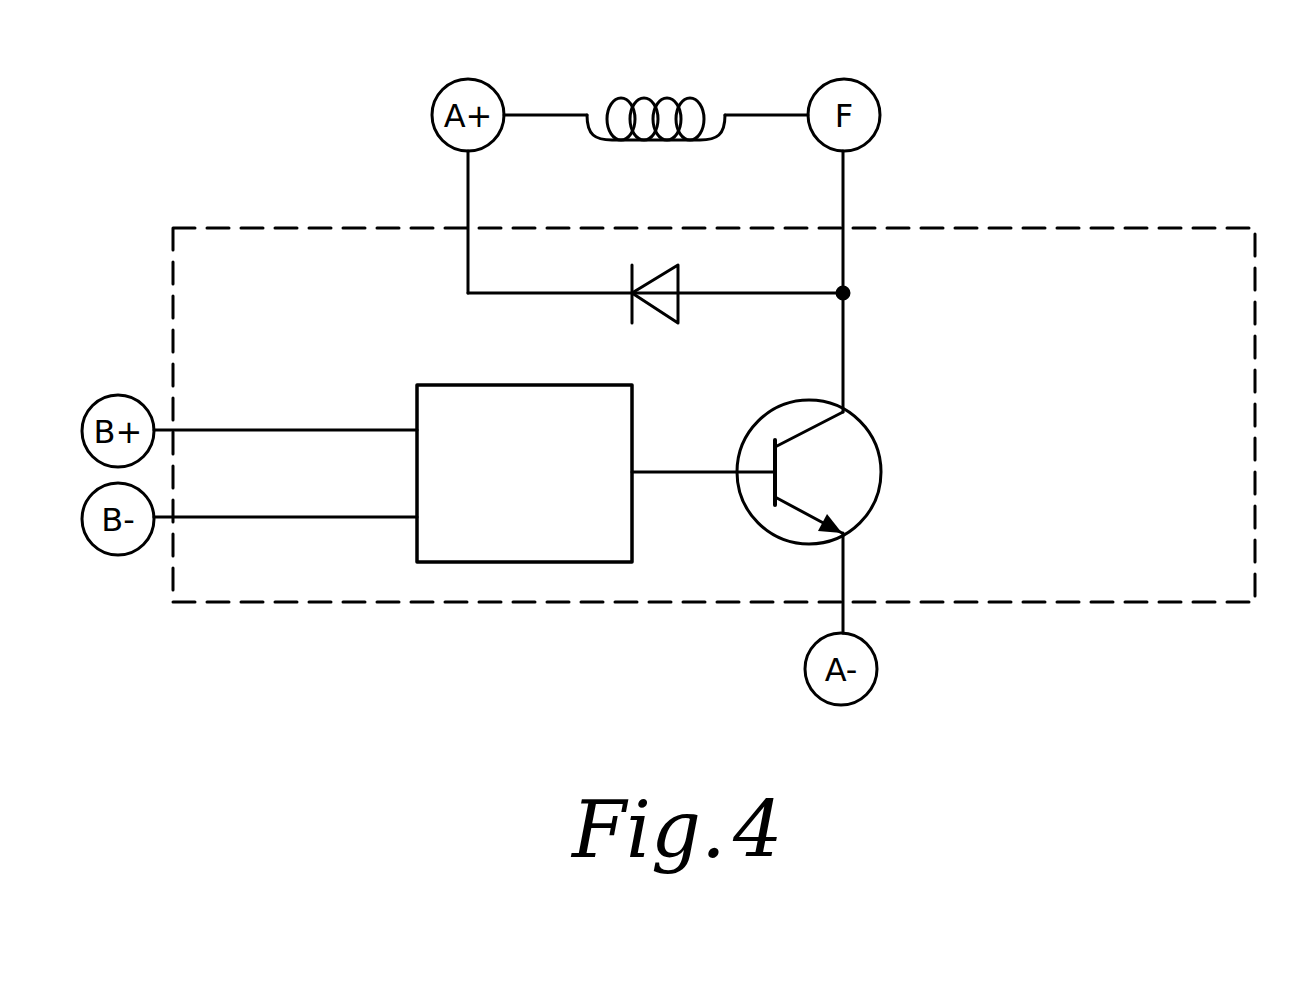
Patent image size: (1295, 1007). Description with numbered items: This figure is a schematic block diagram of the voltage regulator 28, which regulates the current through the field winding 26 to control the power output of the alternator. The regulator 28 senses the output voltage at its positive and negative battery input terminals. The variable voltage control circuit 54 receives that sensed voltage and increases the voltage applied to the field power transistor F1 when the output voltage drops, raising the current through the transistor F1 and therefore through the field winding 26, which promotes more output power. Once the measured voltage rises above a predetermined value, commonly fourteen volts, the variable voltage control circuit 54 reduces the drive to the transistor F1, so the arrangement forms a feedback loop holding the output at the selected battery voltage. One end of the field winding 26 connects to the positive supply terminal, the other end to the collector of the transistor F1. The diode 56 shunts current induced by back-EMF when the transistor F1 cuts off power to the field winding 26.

The field winding 26 is at (664, 98).
The regulator 28 is at (428, 602).
The variable voltage control circuit 54 is at (632, 505).
The diode 56 is at (680, 309).
The field power transistor F1 is at (873, 507).